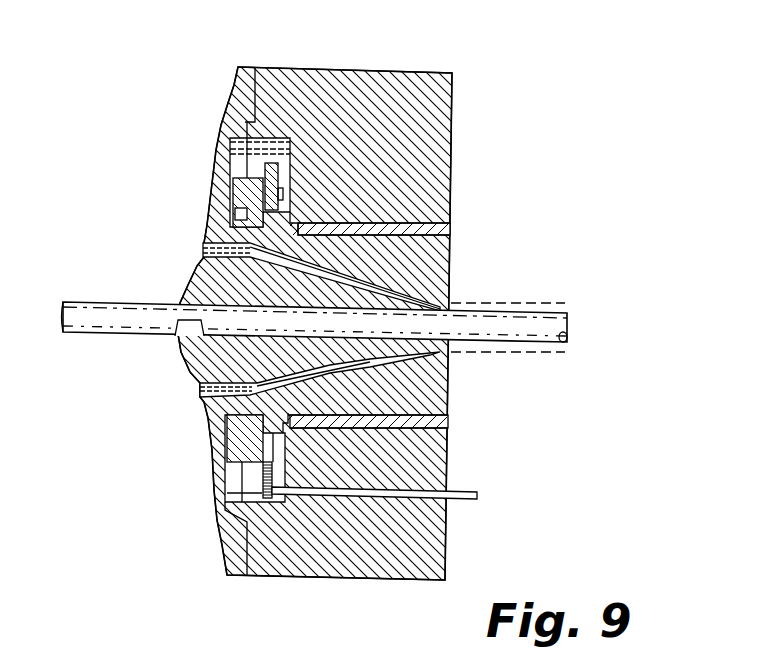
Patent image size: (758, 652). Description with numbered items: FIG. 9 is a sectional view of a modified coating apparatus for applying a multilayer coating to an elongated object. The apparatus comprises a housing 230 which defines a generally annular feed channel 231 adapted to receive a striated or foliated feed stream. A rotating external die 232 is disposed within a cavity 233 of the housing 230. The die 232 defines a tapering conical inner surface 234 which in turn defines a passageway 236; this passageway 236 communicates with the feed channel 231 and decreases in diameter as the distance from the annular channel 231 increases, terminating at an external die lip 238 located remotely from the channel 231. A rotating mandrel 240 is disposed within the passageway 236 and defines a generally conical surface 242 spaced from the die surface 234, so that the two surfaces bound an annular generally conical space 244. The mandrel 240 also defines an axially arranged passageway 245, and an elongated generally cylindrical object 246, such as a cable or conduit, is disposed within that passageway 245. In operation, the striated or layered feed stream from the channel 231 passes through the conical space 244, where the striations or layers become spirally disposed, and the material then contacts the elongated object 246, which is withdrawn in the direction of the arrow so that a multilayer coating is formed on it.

The housing 230 is at (231, 74).
The annular feed channel 231 is at (205, 245).
The rotating external die 232 is at (246, 188).
The cavity 233 is at (282, 157).
The tapering conical inner surface 234 is at (325, 261).
The passageway 236 is at (410, 307).
The external die lip 238 is at (334, 401).
The rotating mandrel 240 is at (197, 284).
The conical surface 242 is at (207, 396).
The annular generally conical space 244 is at (243, 213).
The axially arranged passageway 245 is at (176, 323).
The elongated generally cylindrical object 246 is at (532, 332).